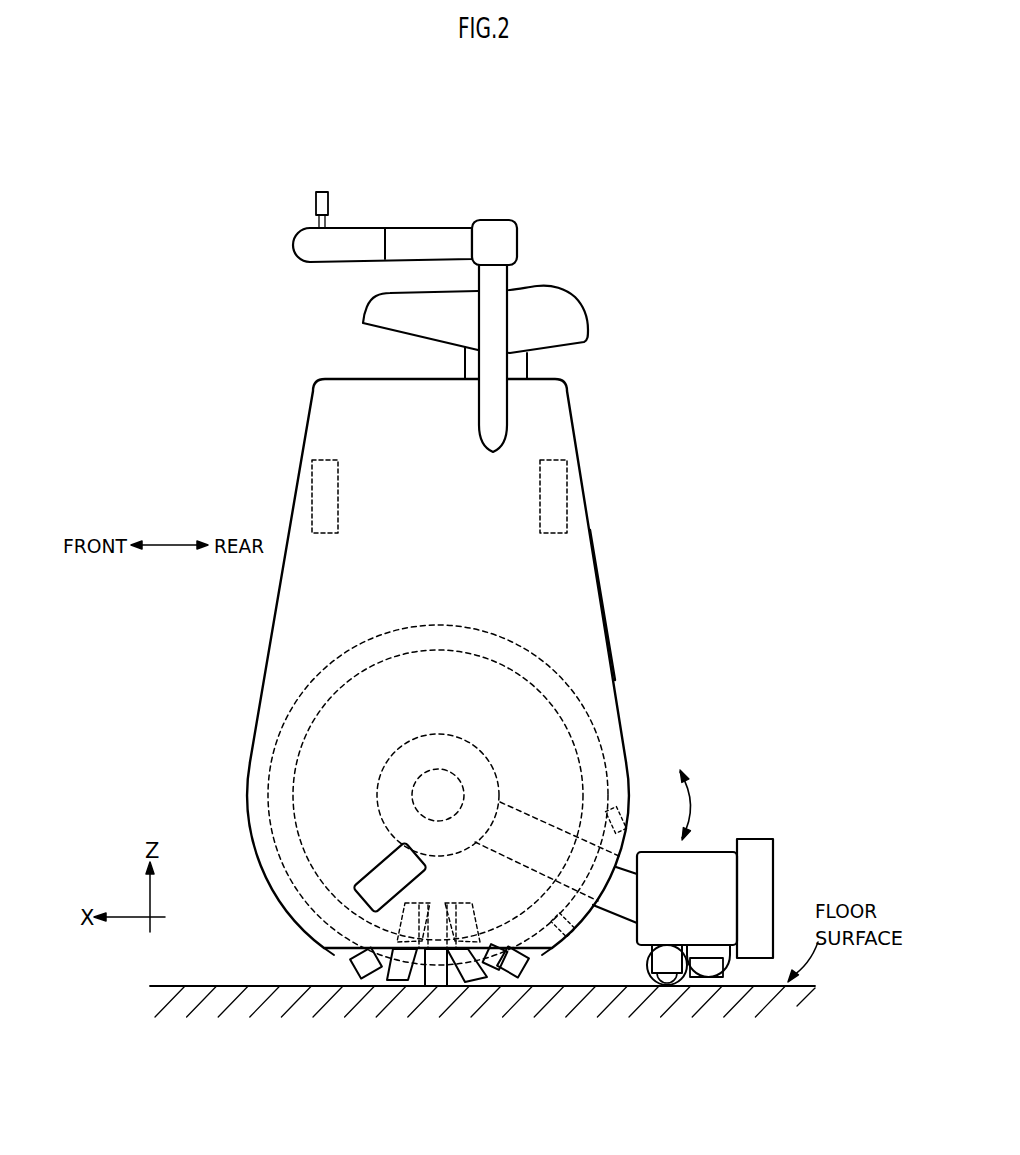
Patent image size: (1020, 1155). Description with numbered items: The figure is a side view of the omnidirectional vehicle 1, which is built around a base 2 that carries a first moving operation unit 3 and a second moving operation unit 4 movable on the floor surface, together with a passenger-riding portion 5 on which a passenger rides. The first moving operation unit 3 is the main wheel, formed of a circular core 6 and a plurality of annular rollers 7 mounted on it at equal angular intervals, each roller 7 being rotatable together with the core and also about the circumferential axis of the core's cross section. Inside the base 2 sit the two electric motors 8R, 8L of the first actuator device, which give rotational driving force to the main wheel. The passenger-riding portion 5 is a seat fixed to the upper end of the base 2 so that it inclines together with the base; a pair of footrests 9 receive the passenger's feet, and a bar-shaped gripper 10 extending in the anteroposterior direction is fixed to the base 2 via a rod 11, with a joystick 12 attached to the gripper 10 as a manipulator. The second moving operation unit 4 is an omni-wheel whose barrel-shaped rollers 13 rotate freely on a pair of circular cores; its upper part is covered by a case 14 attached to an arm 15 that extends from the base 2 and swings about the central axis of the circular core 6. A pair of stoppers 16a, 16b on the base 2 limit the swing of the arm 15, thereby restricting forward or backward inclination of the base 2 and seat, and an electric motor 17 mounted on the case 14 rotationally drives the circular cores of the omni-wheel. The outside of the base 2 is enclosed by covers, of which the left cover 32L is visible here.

The omnidirectional vehicle 1 is at (672, 293).
The base 2 is at (572, 423).
The first moving operation unit 3 is at (529, 980).
The second moving operation unit 4 is at (712, 914).
The passenger-riding portion 5 is at (550, 290).
The circular core 6 is at (425, 955).
The annular rollers 7 is at (400, 975).
The electric motor 8L is at (311, 491).
The electric motor 8R is at (568, 490).
The footrest 9 is at (383, 867).
The gripper 10 is at (364, 232).
The rod 11 is at (496, 396).
The joystick 12 is at (322, 190).
The barrel-shaped rollers 13 is at (660, 982).
The case 14 is at (657, 860).
The arm 15 is at (536, 818).
The stopper 16a is at (627, 808).
The stopper 16b is at (573, 935).
The electric motor 17 is at (767, 858).
The left cover 32L is at (587, 598).